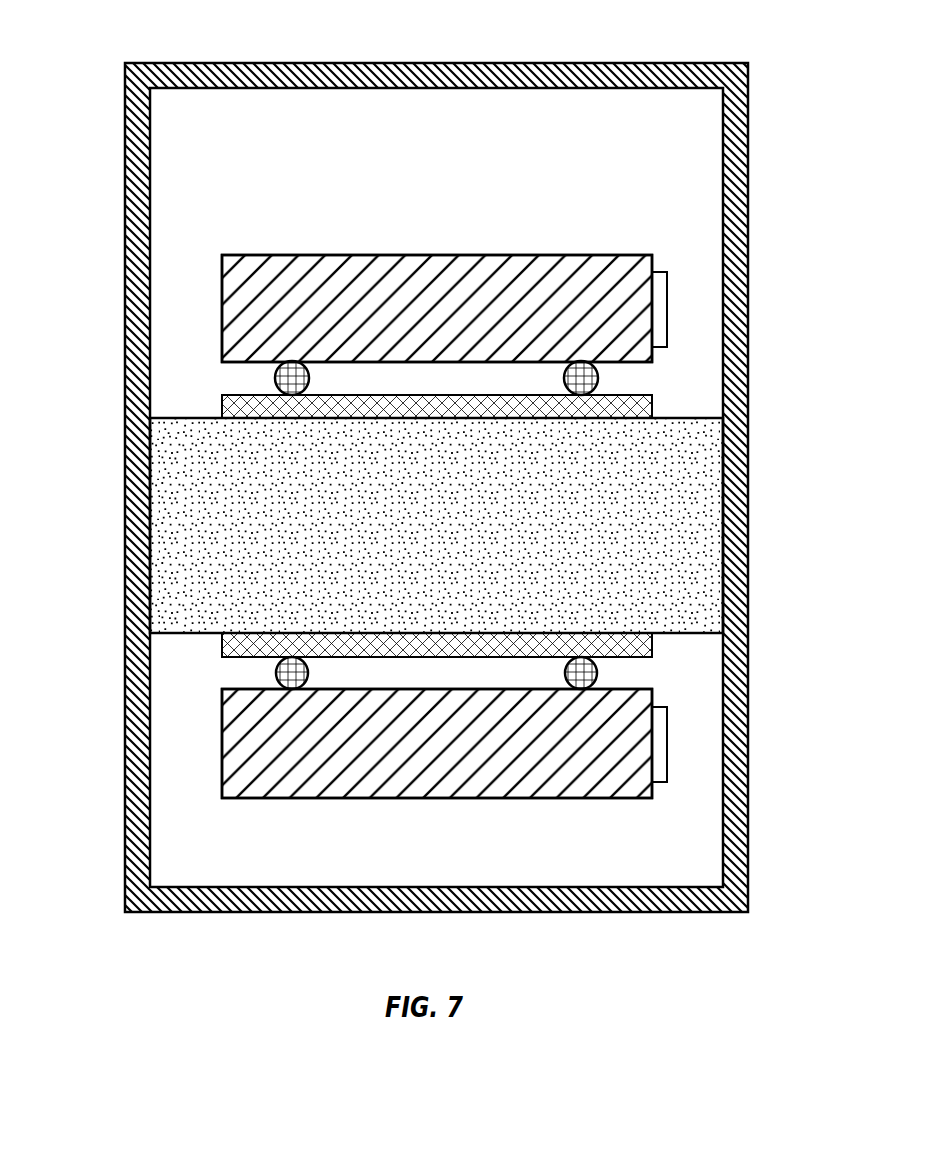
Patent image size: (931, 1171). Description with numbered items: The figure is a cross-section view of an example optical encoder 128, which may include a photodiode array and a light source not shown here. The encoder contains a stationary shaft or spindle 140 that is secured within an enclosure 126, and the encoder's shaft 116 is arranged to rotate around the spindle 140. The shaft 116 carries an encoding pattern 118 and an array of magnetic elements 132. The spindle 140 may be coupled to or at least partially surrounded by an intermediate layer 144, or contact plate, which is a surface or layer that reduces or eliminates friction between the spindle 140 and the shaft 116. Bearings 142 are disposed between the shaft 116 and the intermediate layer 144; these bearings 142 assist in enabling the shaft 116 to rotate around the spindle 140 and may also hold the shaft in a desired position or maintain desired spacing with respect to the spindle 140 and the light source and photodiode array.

The shaft 116 is at (322, 255).
The encoding pattern 118 is at (467, 255).
The enclosure 126 is at (316, 63).
The optical encoder 128 is at (88, 55).
The magnetic elements 132 is at (667, 313).
The spindle 140 is at (705, 475).
The bearings 142 is at (275, 388).
The intermediate layer 144 is at (222, 411).